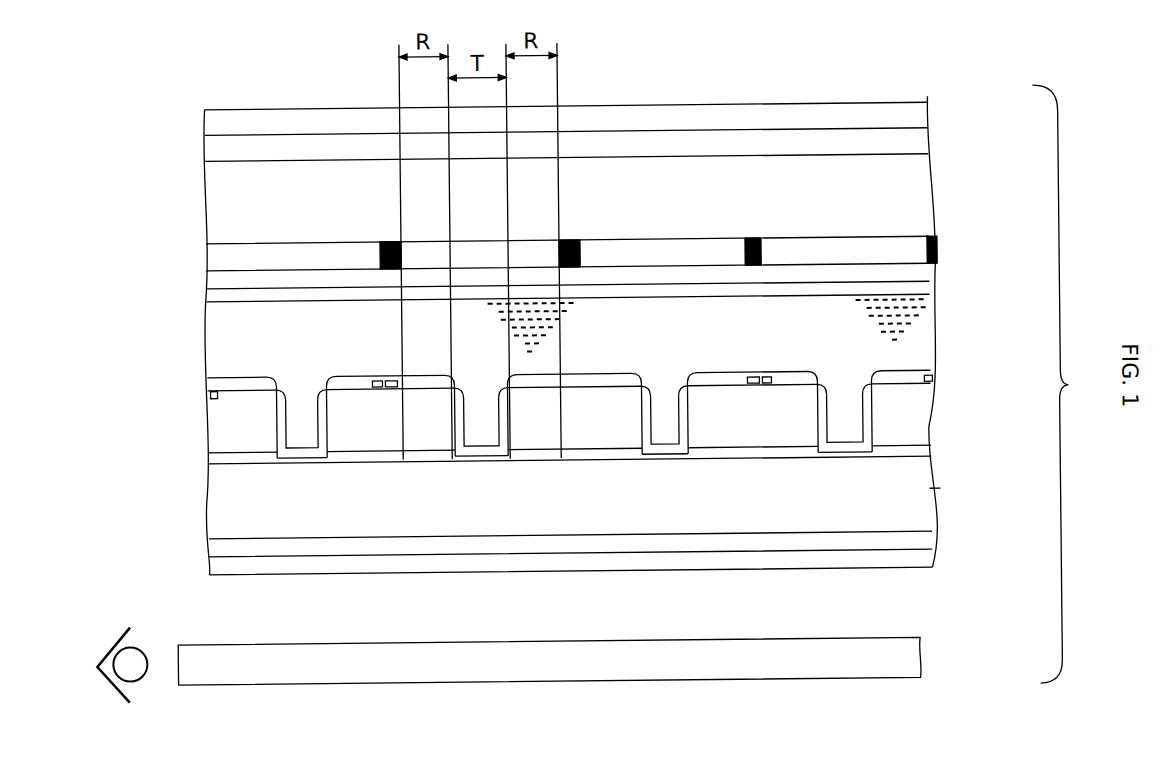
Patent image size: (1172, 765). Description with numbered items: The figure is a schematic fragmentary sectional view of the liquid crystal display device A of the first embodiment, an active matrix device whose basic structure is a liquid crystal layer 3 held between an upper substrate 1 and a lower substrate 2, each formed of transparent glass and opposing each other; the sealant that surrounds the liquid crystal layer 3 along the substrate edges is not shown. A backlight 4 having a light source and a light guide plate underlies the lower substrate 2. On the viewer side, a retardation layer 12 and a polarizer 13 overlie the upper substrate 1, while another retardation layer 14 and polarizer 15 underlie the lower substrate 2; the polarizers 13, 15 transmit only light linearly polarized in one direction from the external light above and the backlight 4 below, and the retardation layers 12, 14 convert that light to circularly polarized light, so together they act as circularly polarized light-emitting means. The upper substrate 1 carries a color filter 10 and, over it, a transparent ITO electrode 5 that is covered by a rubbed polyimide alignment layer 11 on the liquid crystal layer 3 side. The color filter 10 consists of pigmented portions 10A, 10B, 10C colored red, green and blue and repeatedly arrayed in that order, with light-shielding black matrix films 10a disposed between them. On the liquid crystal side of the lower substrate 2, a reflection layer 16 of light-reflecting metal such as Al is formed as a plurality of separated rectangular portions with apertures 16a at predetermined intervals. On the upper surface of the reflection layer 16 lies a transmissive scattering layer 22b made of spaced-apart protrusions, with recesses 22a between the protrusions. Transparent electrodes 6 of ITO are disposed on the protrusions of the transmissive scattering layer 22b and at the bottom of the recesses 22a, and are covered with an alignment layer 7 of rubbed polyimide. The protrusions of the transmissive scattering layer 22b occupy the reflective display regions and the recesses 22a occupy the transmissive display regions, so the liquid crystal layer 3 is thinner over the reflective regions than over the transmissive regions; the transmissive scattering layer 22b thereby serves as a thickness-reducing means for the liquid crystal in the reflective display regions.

The upper substrate 1 is at (919, 192).
The lower substrate 2 is at (946, 492).
The liquid crystal layer 3 is at (910, 331).
The backlight 4 is at (905, 658).
The transparent electrode 5 is at (928, 276).
The transparent electrodes 6 is at (209, 394).
The alignment layer 7 is at (942, 376).
The color filter 10 is at (621, 166).
The pigmented portion 10A is at (264, 240).
The pigmented portion 10B is at (426, 238).
The pigmented portion 10C is at (671, 241).
The light-shielding films 10a is at (571, 240).
The alignment layer 11 is at (921, 291).
The retardation layer 12 is at (912, 147).
The polarizer 13 is at (912, 117).
The retardation layer 14 is at (926, 542).
The polarizer 15 is at (926, 561).
The reflection layer 16 is at (927, 456).
The apertures 16a is at (642, 458).
The recesses 22a is at (299, 442).
The transmissive scattering layer 22b is at (914, 419).
The liquid crystal display device A is at (1062, 384).